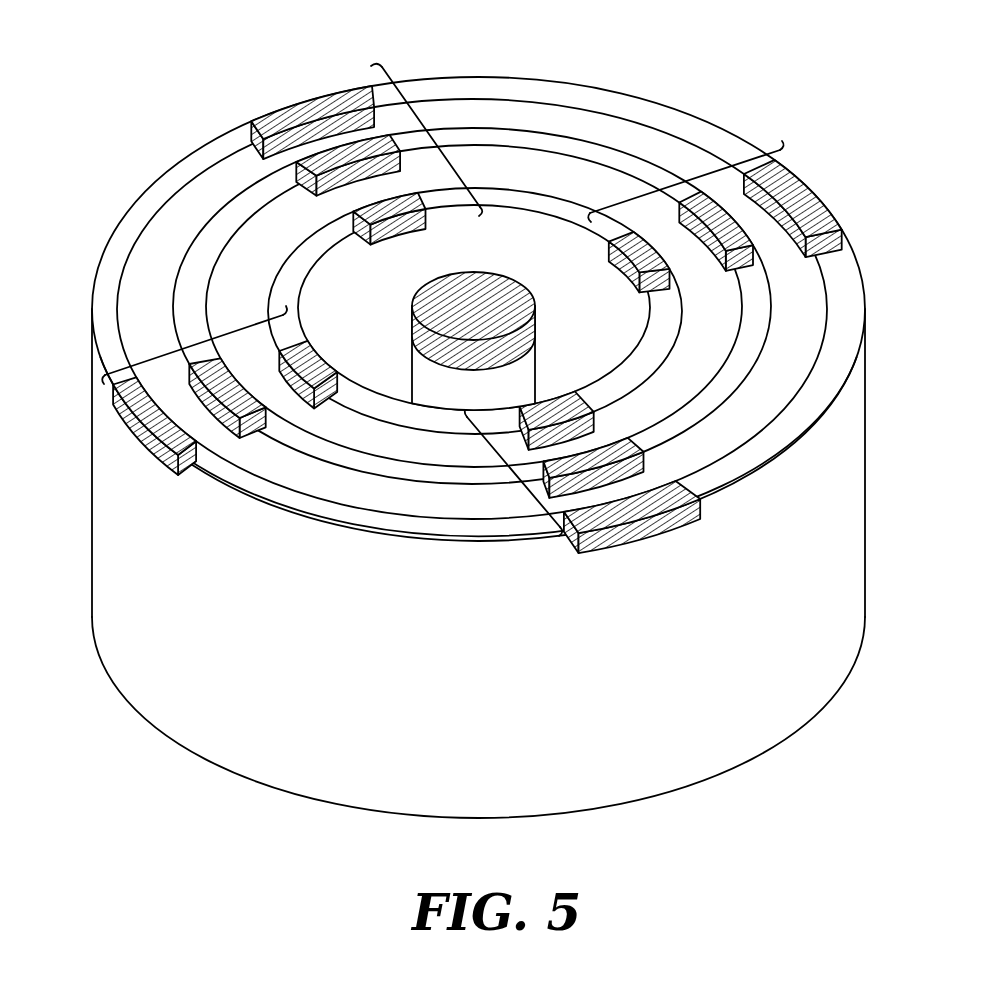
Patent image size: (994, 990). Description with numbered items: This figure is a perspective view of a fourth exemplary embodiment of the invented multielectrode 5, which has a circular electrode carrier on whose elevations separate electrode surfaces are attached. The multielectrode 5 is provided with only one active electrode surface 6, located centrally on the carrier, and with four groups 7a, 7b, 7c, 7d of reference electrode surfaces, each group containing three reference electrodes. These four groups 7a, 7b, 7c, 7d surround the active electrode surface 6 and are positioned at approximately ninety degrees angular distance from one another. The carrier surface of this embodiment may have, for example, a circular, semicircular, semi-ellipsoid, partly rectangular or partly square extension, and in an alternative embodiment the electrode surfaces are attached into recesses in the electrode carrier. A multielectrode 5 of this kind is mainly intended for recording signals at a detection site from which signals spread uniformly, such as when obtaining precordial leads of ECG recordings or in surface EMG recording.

The multielectrode 5 is at (130, 131).
The active electrode surface 6 is at (478, 268).
The group of reference electrode surfaces 7a is at (440, 132).
The group of reference electrode surfaces 7b is at (683, 176).
The group of reference electrode surfaces 7c is at (500, 477).
The group of reference electrode surfaces 7d is at (196, 337).